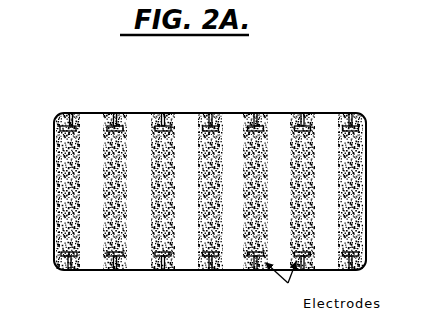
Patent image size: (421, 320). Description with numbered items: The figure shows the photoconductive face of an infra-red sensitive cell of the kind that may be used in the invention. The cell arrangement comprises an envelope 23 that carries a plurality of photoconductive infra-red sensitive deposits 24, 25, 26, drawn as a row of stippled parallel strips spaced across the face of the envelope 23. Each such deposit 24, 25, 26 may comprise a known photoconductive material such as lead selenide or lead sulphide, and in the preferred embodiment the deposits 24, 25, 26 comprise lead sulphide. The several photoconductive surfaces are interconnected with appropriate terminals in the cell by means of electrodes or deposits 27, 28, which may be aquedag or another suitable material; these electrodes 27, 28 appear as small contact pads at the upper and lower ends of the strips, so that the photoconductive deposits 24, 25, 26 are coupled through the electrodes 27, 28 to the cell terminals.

The envelope 23 is at (283, 128).
The photoconductive infra-red sensitive deposit 24 is at (80, 271).
The photoconductive infra-red sensitive deposit 25 is at (128, 271).
The photoconductive infra-red sensitive deposit 26 is at (176, 271).
The electrode 27 is at (70, 113).
The electrode 28 is at (114, 113).